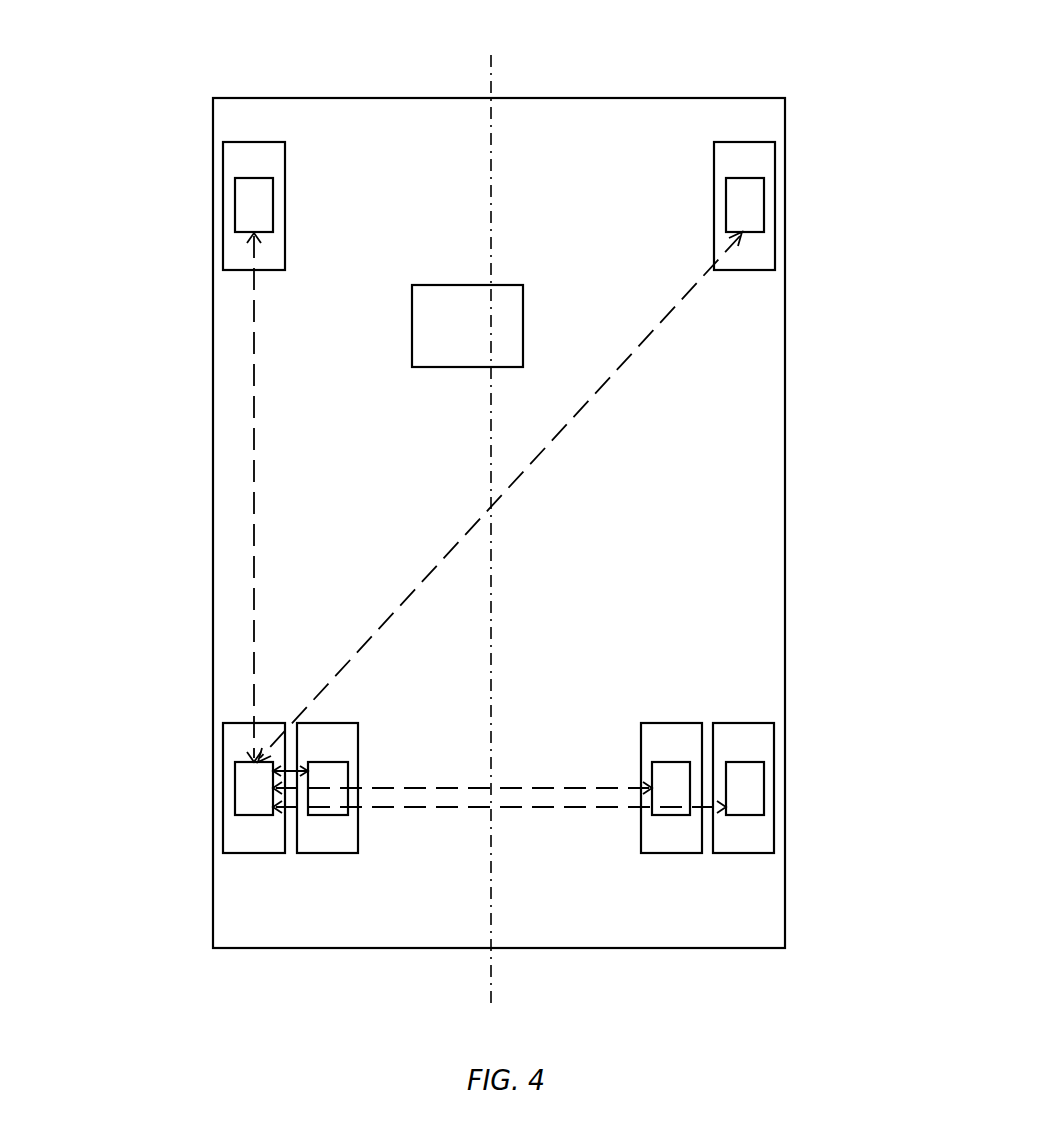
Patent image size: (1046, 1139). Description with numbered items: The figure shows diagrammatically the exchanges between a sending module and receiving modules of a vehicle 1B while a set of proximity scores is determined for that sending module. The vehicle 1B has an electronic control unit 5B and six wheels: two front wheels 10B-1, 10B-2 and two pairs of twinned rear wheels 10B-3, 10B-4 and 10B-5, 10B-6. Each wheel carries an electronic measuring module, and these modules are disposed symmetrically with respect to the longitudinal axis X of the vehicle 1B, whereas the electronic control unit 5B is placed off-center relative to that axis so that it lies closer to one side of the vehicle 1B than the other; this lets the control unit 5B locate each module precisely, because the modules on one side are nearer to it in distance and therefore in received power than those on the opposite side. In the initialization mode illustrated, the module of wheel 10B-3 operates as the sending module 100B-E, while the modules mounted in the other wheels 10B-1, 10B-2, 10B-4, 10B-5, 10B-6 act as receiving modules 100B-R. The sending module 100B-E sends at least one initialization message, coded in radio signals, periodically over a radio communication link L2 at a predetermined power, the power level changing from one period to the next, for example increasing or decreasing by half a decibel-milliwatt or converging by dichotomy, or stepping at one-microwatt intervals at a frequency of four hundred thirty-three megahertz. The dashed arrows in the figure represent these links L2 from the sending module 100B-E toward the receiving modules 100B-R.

The vehicle 1B is at (573, 98).
The longitudinal axis X is at (491, 525).
The electronic control unit 5B is at (486, 342).
The wheel 10B-1 is at (223, 158).
The wheel 10B-2 is at (775, 164).
The wheel 10B-3 is at (223, 740).
The wheel 10B-4 is at (303, 855).
The wheel 10B-5 is at (656, 855).
The wheel 10B-6 is at (775, 745).
The receiving module 100B-R is at (235, 205).
The sending module 100B-E is at (235, 785).
The radio communication link L2 is at (494, 539).